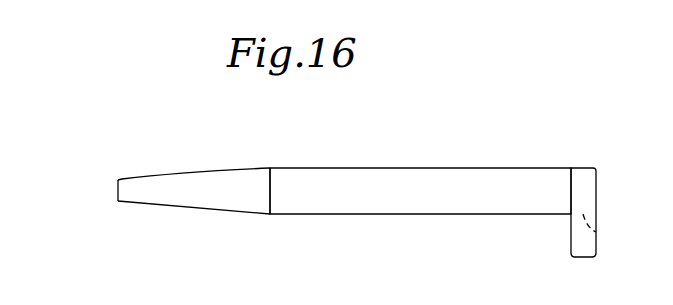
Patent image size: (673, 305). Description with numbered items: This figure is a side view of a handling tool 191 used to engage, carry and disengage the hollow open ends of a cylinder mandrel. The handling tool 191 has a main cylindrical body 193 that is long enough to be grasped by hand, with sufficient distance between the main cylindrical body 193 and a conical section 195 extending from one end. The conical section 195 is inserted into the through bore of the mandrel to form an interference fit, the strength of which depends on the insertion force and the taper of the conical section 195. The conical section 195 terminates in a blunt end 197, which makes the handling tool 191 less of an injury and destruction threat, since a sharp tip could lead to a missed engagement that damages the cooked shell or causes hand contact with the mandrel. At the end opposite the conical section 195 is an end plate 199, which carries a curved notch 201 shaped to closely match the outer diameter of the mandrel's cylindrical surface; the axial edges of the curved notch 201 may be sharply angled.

The handling tool 191 is at (423, 152).
The main cylindrical body 193 is at (482, 178).
The conical section 195 is at (223, 188).
The blunt end 197 is at (118, 188).
The end plate 199 is at (588, 192).
The curved notch 201 is at (596, 232).